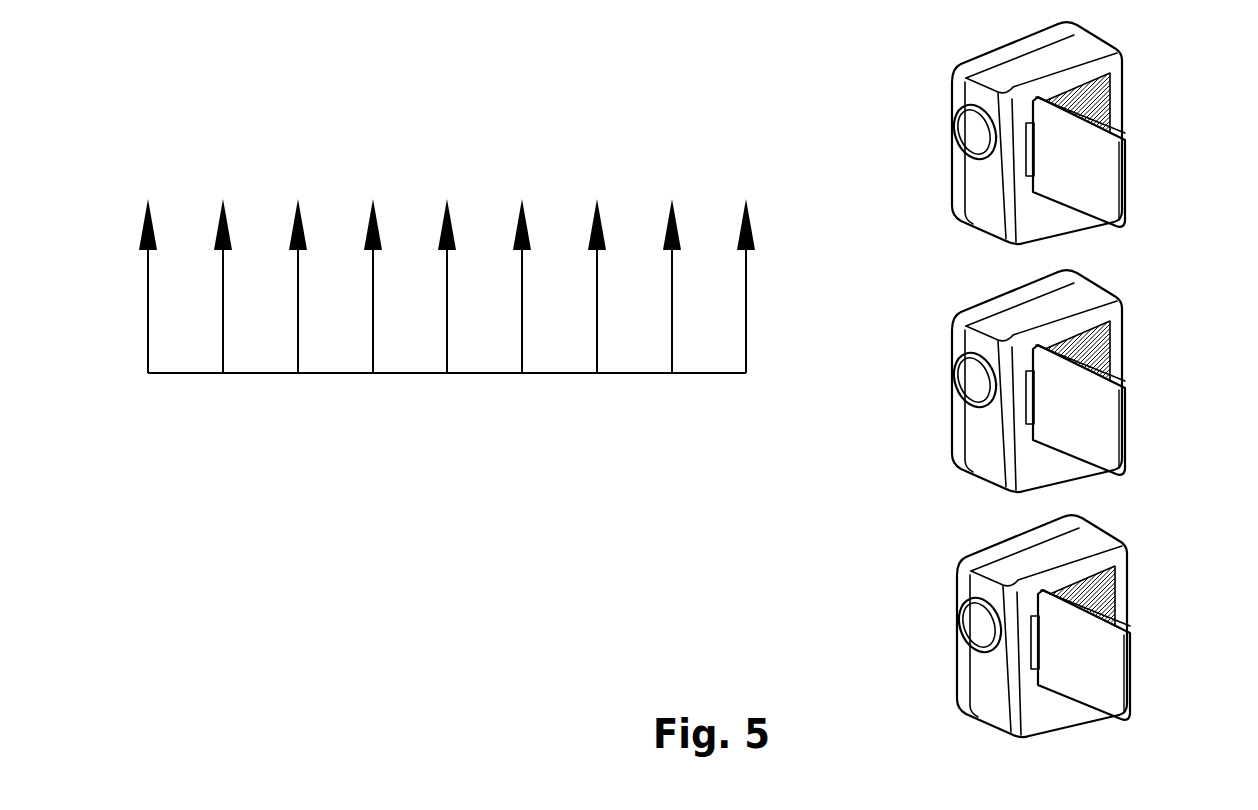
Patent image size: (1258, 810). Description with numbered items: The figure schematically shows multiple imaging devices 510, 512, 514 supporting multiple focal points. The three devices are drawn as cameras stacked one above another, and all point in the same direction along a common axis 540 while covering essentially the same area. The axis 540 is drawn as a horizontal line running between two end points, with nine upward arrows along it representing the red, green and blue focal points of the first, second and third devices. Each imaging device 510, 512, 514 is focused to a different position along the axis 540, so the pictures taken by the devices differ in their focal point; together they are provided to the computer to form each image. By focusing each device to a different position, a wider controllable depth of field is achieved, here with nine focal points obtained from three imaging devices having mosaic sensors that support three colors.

The imaging device 510 is at (1123, 80).
The imaging device 512 is at (1124, 329).
The imaging device 514 is at (1130, 573).
The axis 540 is at (488, 374).